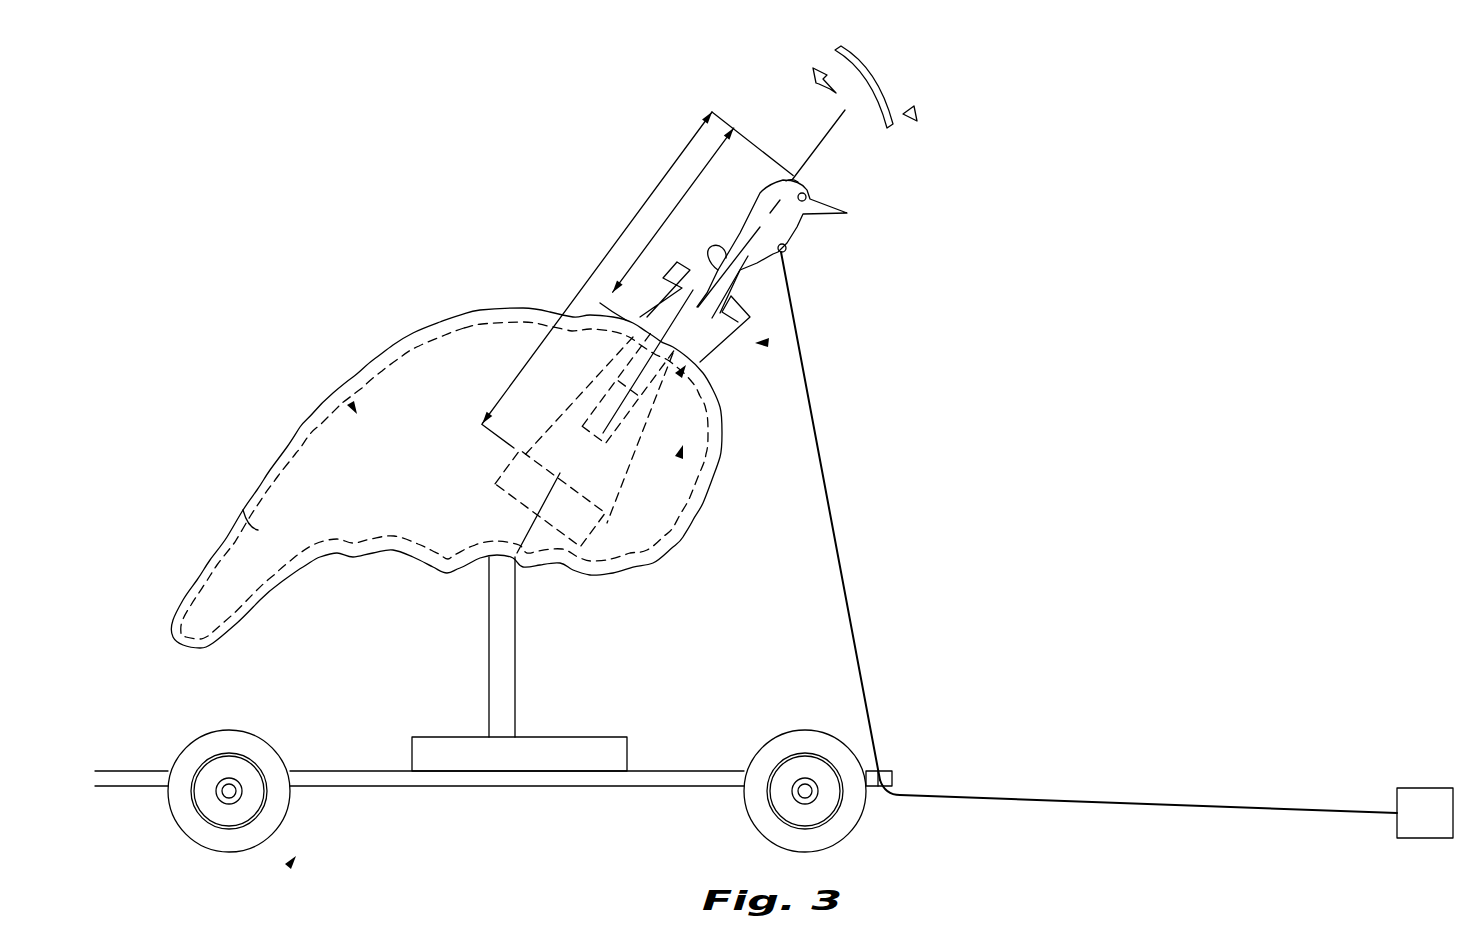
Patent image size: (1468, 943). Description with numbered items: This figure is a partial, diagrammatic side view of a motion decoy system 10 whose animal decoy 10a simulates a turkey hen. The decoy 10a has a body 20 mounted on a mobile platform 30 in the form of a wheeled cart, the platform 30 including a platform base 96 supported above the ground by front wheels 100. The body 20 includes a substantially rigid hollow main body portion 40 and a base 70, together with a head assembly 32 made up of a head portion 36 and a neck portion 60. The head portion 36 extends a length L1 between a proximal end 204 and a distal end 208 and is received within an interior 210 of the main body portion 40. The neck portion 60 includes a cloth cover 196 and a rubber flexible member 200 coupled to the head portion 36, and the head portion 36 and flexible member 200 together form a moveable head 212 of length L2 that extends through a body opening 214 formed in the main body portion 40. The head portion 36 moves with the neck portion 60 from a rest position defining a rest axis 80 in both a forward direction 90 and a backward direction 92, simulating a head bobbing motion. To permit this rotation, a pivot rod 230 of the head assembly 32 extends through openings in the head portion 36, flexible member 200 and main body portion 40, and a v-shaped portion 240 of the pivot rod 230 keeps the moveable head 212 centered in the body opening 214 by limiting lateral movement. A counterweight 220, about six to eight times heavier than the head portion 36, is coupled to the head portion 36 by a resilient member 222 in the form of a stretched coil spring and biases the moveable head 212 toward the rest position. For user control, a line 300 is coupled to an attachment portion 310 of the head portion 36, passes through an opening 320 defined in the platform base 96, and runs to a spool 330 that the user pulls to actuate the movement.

The motion decoy system 10 is at (935, 192).
The animal decoy 10a is at (230, 477).
The body 20 is at (452, 285).
The mobile platform 30 is at (292, 862).
The head assembly 32 is at (687, 157).
The head portion 36 is at (835, 210).
The main body portion 40 is at (295, 437).
The neck portion 60 is at (760, 344).
The base 70 is at (455, 750).
The rest axis 80 is at (827, 136).
The forward direction 90 is at (893, 90).
The backward direction 92 is at (826, 72).
The platform base 96 is at (340, 790).
The front wheels 100 is at (175, 820).
The cover 196 is at (735, 320).
The flexible member 200 is at (662, 282).
The proximal end 204 is at (800, 182).
The distal end 208 is at (623, 317).
The interior 210 is at (355, 412).
The moveable head 212 is at (684, 450).
The body opening 214 is at (690, 376).
The counterweight 220 is at (500, 490).
The resilient member 222 is at (613, 423).
The pivot rod 230 is at (660, 395).
The v-shaped portion 240 is at (403, 340).
The line 300 is at (1108, 803).
The attachment portion 310 is at (788, 252).
The opening 320 is at (890, 773).
The spool 330 is at (1415, 788).
The length L1 is at (599, 265).
The length L2 is at (611, 279).